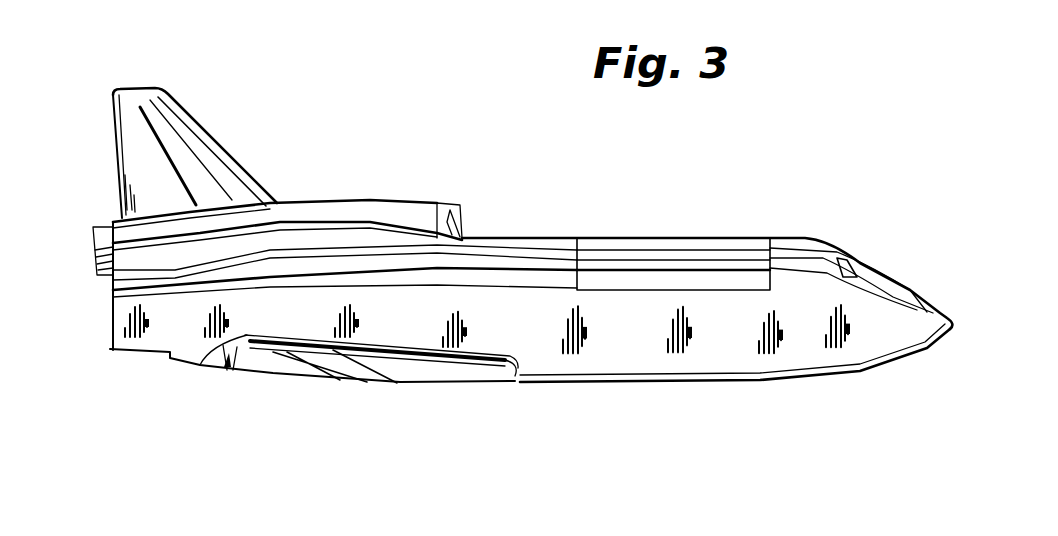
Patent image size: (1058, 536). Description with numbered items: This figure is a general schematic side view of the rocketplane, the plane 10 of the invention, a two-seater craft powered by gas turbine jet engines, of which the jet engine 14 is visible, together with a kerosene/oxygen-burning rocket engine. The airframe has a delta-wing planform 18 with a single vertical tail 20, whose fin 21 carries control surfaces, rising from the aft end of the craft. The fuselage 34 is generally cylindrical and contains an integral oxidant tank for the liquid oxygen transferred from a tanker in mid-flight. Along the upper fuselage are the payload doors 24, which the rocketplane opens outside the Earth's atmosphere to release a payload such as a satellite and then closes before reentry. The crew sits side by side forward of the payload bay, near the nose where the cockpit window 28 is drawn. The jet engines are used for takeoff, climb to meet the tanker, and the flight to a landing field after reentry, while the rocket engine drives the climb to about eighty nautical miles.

The plane 10 is at (826, 102).
The jet engine 14 is at (108, 285).
The delta-wing planform 18 is at (363, 353).
The vertical tail 20 is at (228, 158).
The fin 21 is at (125, 157).
The payload doors 24 is at (685, 258).
The cockpit window 28 is at (853, 273).
The fuselage 34 is at (512, 258).